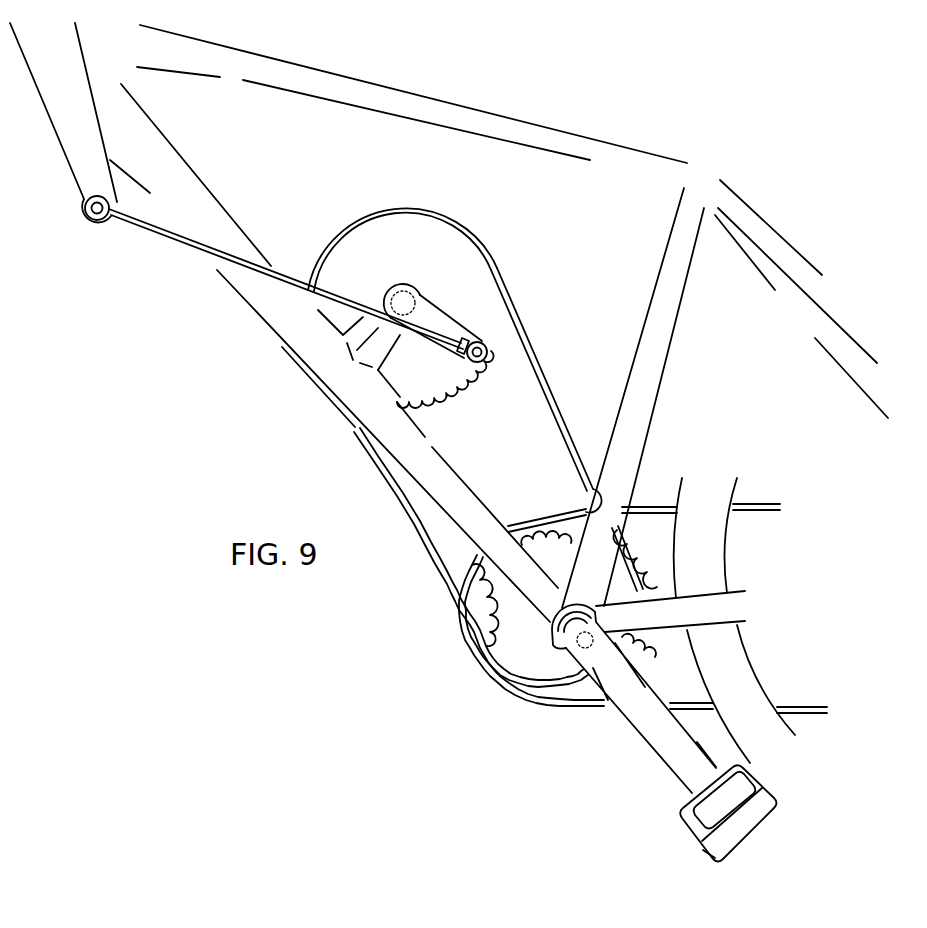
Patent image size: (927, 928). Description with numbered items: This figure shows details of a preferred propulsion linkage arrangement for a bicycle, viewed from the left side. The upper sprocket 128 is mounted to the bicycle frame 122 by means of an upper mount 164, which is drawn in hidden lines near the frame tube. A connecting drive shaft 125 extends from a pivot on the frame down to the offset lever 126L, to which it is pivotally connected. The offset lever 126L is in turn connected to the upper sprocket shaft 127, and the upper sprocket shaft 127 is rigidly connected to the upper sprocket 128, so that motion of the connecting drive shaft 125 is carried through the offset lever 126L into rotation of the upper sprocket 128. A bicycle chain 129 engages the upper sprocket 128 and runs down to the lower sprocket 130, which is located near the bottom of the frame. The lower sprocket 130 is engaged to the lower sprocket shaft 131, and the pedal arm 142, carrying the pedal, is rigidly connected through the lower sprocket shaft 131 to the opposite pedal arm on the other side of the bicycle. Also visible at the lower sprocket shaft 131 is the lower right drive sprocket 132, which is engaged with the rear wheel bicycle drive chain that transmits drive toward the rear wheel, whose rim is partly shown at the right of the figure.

The bicycle frame 122 is at (258, 316).
The connecting drive shaft 125 is at (288, 278).
The offset lever 126L is at (475, 310).
The upper sprocket shaft 127 is at (405, 290).
The upper sprocket 128 is at (452, 252).
The bicycle chain 129 is at (540, 393).
The lower sprocket 130 is at (530, 540).
The lower sprocket shaft 131 is at (577, 643).
The lower right drive sprocket 132 is at (643, 548).
The pedal arm 142 is at (625, 725).
The upper mount 164 is at (362, 358).